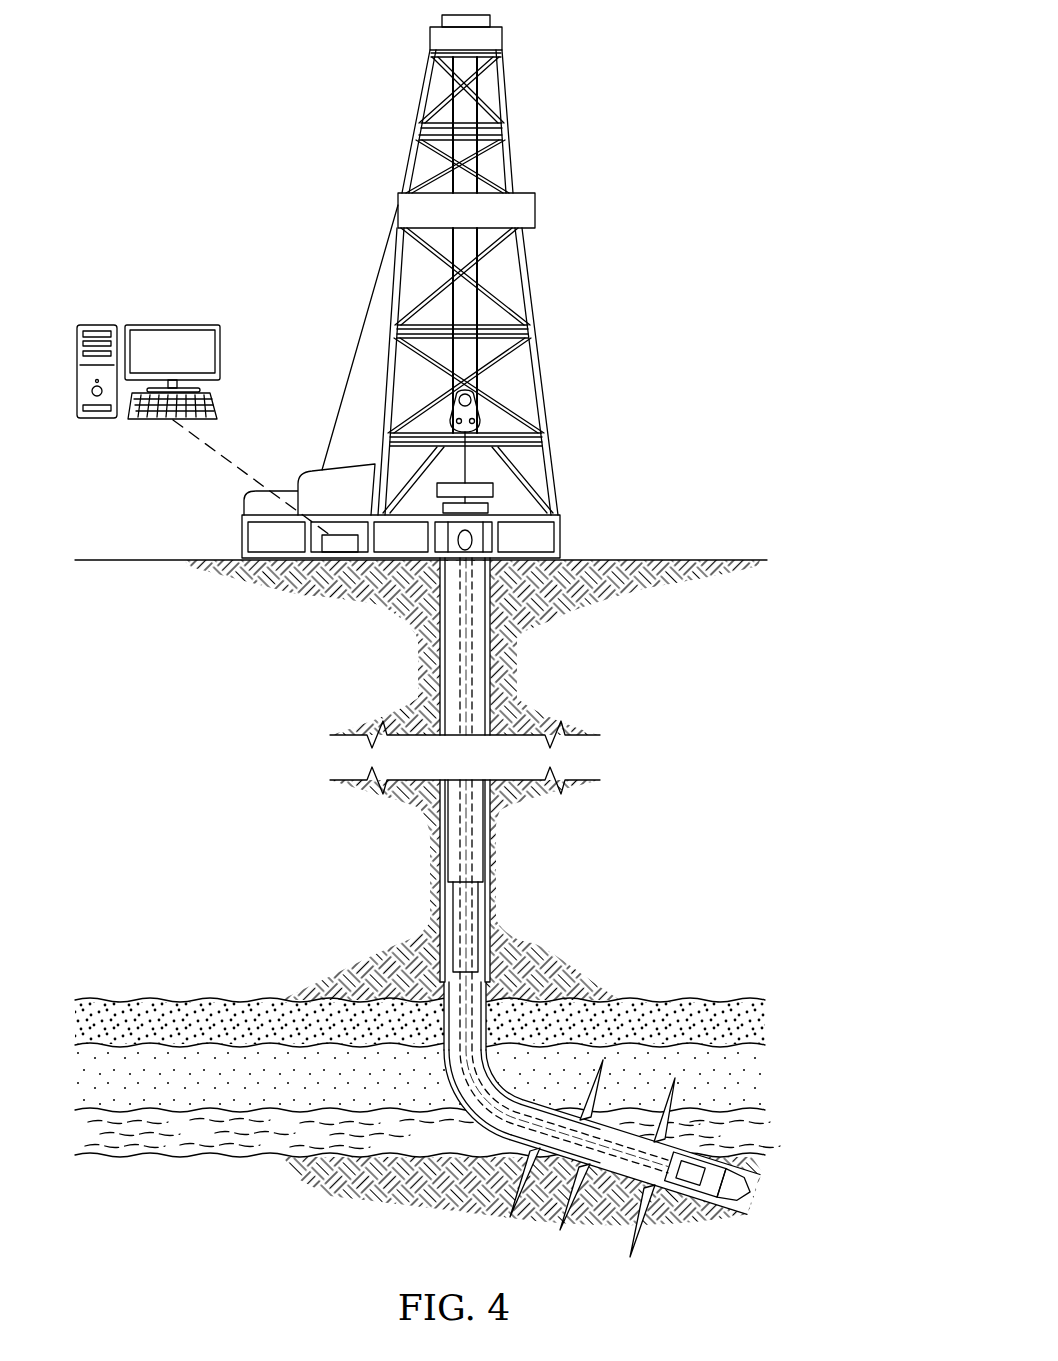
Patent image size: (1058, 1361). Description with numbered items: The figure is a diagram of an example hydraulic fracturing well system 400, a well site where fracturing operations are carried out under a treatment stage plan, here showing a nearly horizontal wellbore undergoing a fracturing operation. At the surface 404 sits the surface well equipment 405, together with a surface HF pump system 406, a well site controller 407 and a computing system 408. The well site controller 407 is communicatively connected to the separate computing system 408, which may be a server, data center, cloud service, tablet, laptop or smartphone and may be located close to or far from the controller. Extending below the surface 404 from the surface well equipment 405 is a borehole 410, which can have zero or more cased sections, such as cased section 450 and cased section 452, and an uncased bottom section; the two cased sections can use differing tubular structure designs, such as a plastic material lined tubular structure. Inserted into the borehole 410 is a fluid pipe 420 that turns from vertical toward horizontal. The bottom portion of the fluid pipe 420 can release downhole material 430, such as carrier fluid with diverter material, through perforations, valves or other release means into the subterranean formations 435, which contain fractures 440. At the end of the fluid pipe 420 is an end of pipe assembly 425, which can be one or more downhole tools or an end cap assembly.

The hydraulic fracturing well system 400 is at (307, 57).
The surface 404 is at (673, 560).
The surface well equipment 405 is at (512, 163).
The surface HF pump system 406 is at (474, 540).
The well site controller 407 is at (343, 560).
The computing system 408 is at (172, 323).
The borehole 410 is at (438, 702).
The fluid pipe 420 is at (450, 1064).
The end of pipe assembly 425 is at (723, 1180).
The downhole material 430 is at (482, 1116).
The subterranean formations 435 is at (691, 967).
The fractures 440 is at (592, 1097).
The cased section 450 is at (477, 822).
The cased section 452 is at (475, 903).